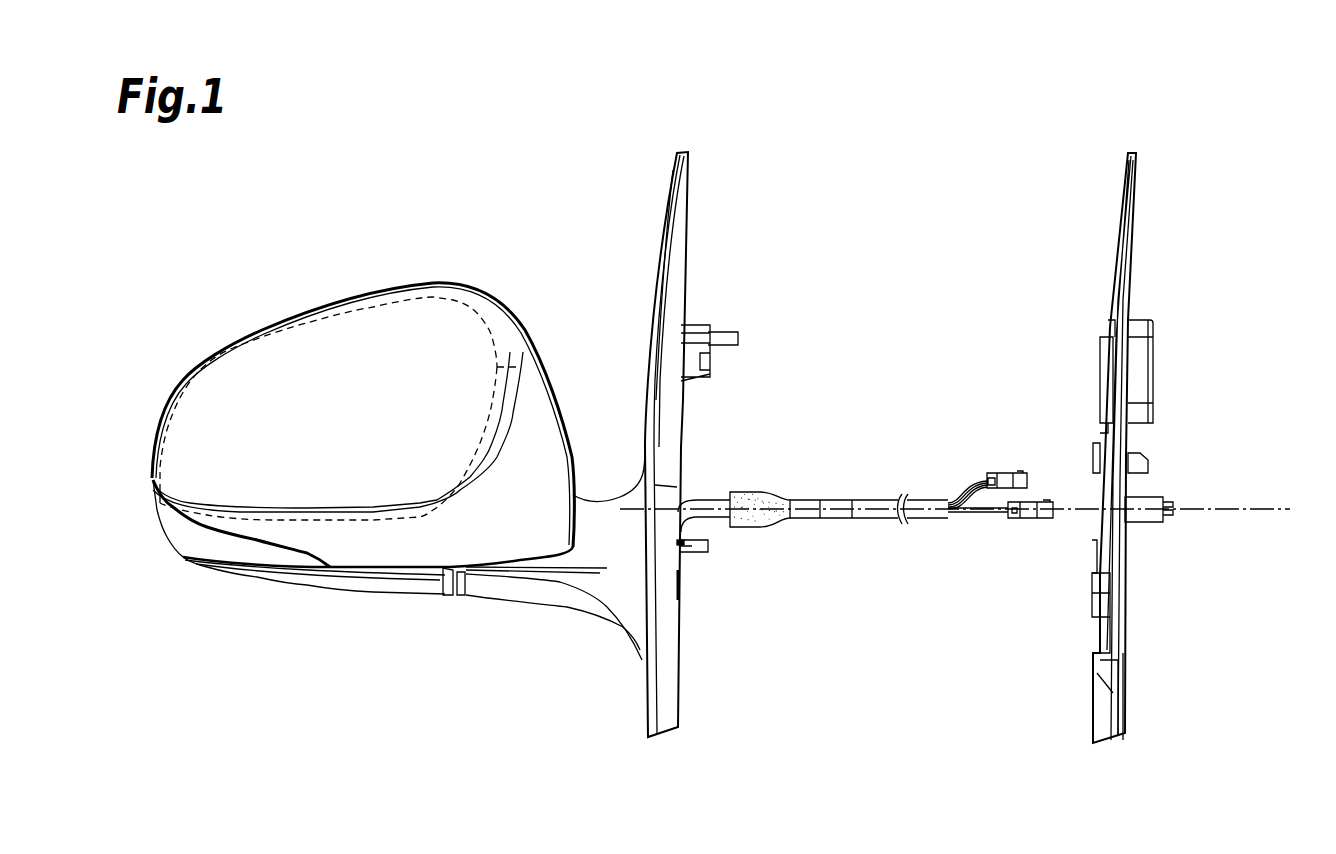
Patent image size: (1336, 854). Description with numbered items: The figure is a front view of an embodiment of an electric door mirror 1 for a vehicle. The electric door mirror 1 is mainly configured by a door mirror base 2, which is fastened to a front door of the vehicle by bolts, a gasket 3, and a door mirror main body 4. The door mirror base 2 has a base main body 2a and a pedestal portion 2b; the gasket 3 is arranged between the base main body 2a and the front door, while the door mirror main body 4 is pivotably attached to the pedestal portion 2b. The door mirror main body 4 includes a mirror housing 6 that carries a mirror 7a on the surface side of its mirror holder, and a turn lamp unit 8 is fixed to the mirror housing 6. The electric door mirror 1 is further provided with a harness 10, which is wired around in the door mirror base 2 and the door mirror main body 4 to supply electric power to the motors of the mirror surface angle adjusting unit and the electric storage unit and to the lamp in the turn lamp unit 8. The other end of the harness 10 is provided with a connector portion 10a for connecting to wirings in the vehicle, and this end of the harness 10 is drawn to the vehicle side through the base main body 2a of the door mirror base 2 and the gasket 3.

The electric door mirror 1 is at (913, 158).
The door mirror base 2 is at (630, 222).
The base main body 2a is at (678, 228).
The pedestal portion 2b is at (548, 592).
The gasket 3 is at (1132, 270).
The door mirror main body 4 is at (177, 336).
The mirror housing 6 is at (542, 440).
The mirror 7a is at (533, 340).
The turn lamp unit 8 is at (165, 527).
The harness 10 is at (707, 518).
The connector portion 10a is at (1043, 500).